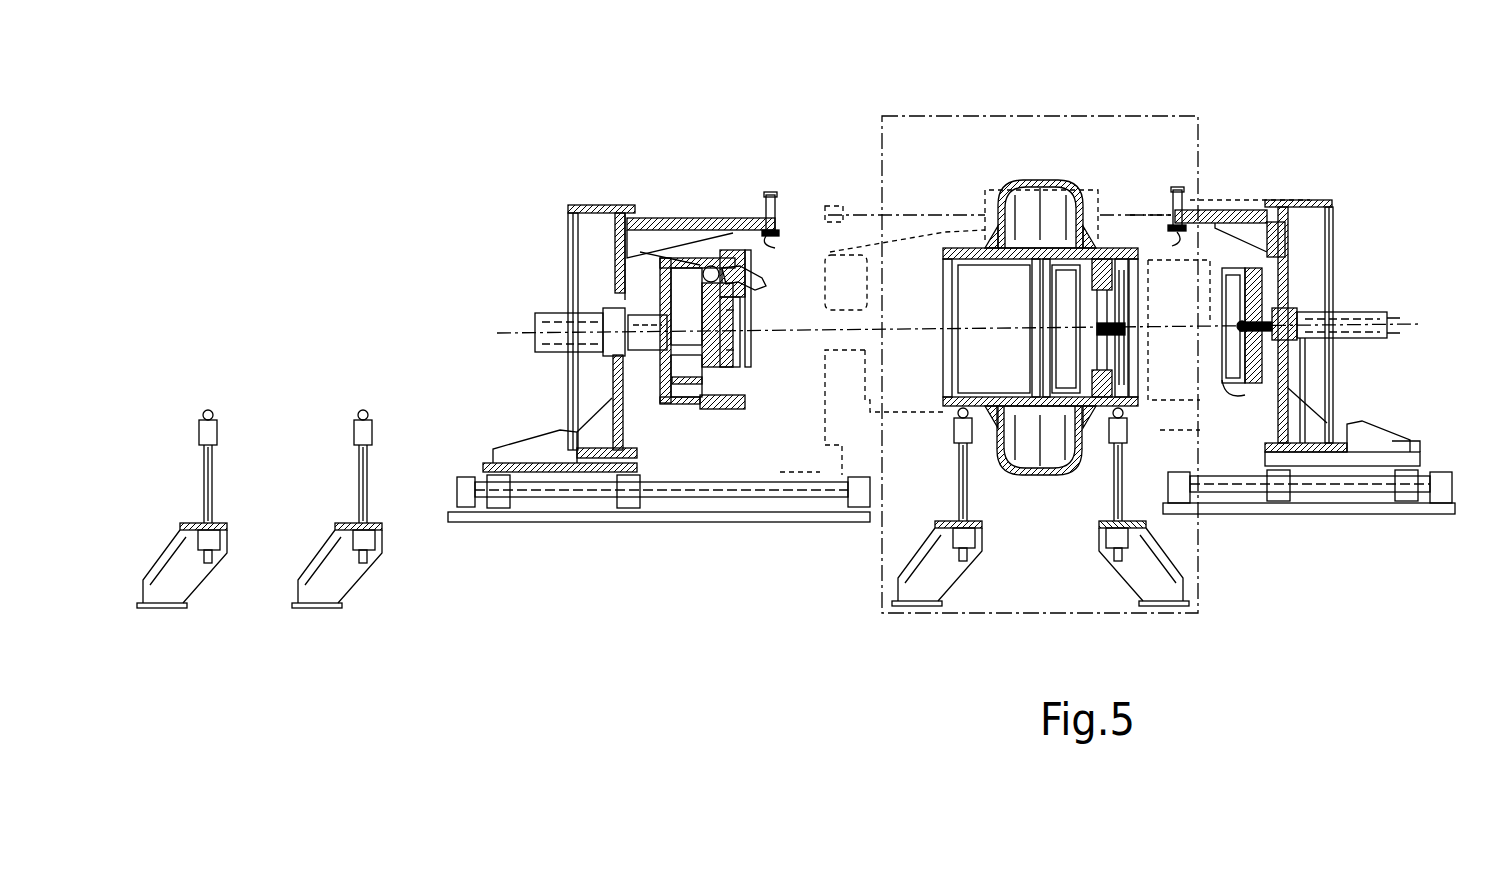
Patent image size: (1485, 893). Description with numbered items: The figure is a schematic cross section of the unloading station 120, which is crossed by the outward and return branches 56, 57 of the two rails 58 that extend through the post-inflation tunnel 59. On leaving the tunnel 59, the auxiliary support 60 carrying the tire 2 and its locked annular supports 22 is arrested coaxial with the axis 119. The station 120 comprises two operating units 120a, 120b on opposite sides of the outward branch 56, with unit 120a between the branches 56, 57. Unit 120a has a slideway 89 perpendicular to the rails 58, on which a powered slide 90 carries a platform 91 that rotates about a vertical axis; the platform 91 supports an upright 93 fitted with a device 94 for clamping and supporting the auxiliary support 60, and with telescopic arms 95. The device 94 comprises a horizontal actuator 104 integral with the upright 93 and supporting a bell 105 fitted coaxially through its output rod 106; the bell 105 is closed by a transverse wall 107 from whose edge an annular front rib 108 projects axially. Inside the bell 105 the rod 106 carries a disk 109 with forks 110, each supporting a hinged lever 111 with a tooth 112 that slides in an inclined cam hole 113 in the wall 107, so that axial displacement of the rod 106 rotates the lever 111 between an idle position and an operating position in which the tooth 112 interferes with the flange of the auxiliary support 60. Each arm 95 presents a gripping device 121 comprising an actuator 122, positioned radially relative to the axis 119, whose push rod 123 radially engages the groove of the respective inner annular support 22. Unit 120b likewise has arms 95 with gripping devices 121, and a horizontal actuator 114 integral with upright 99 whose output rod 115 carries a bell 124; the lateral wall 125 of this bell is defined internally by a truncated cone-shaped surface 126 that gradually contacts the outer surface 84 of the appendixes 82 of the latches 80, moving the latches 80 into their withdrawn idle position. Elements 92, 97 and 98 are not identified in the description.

The tire 2 is at (1035, 180).
The annular support 22 is at (1005, 262).
The outward branch 56 is at (1140, 420).
The return branch 57 is at (385, 415).
The rail 58 is at (208, 410).
The post-inflation tunnel 59 is at (1200, 125).
The auxiliary support 60 is at (935, 375).
The latch 80 is at (1100, 262).
The appendix 82 is at (1125, 285).
The surface 84 is at (1118, 268).
The slideway 89 is at (585, 498).
The powered slide 90 is at (535, 470).
The platform 91 is at (518, 445).
The brace 92 is at (560, 425).
The upright 93 is at (590, 248).
The device 94 is at (680, 420).
The telescopic arm 95 is at (672, 218).
The guide rail 97 is at (1365, 490).
The bracket 98 is at (1420, 445).
The upright 99 is at (1310, 362).
The actuator 104 is at (548, 318).
The bell 105 is at (695, 412).
The output rod 106 is at (662, 370).
The transverse wall 107 is at (755, 330).
The annular front rib 108 is at (748, 300).
The disk 109 is at (745, 372).
The fork 110 is at (698, 262).
The hinged lever 111 is at (752, 288).
The tooth 112 is at (765, 272).
The inclined cam hole 113 is at (722, 290).
The actuator 114 is at (1385, 332).
The output rod 115 is at (1290, 300).
The axis 119 is at (1410, 320).
The unloading station 120 is at (1207, 188).
The operating unit 120a is at (545, 268).
The operating unit 120b is at (1340, 268).
The gripping device 121 is at (778, 200).
The actuator 122 is at (770, 195).
The push rod 123 is at (775, 245).
The bell 124 is at (1265, 290).
The lateral wall 125 is at (1239, 420).
The truncated cone-shaped surface 126 is at (1250, 385).